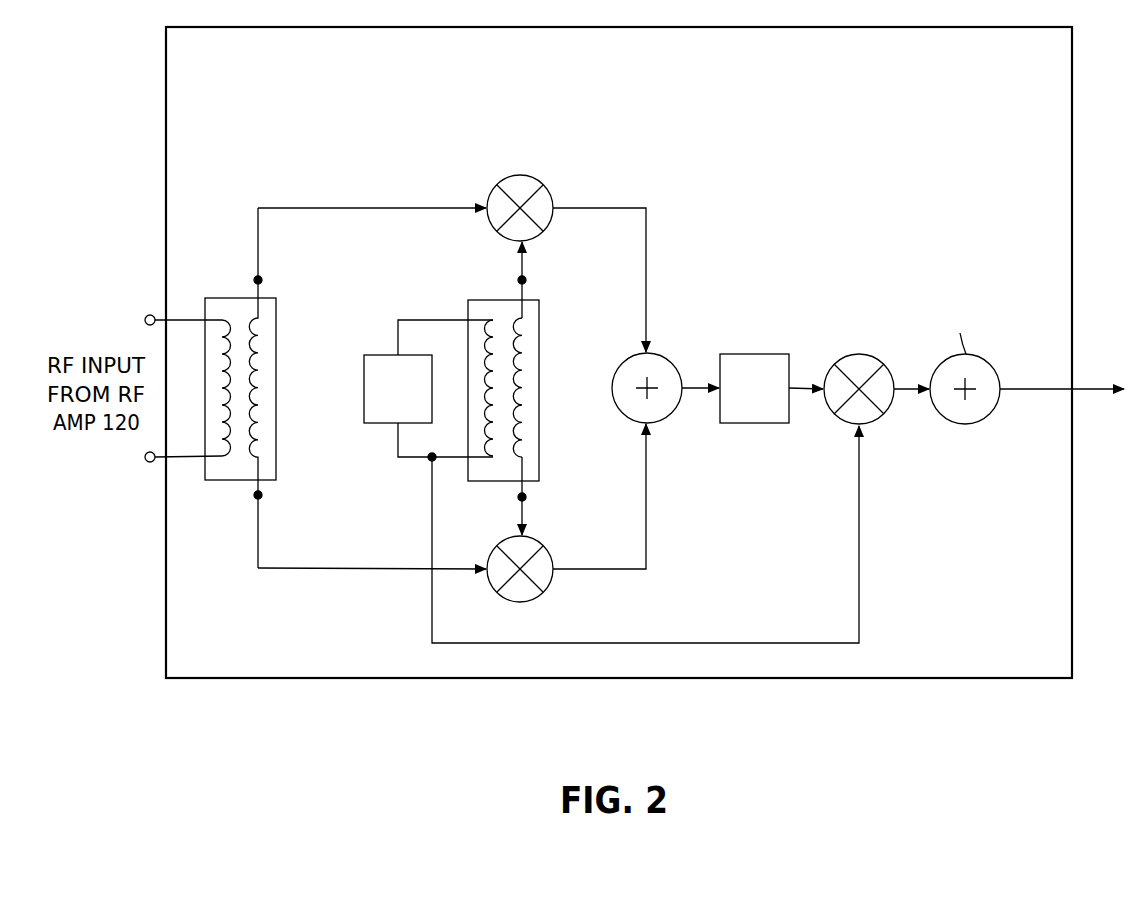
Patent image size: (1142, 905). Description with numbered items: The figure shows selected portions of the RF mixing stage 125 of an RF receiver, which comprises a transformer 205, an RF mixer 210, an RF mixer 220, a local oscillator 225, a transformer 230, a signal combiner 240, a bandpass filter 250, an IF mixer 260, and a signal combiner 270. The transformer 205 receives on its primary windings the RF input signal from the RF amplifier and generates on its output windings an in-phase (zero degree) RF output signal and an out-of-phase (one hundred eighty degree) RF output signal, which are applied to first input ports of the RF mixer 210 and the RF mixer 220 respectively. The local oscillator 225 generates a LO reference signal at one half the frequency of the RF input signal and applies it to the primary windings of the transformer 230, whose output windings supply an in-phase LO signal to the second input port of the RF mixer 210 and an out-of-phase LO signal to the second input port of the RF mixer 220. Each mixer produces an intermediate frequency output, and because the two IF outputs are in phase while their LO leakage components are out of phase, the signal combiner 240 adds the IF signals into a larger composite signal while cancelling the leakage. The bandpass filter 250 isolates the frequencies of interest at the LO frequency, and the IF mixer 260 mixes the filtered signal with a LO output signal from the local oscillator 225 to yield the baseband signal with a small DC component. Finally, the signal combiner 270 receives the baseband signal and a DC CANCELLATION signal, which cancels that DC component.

The RF mixing stage 125 is at (645, 680).
The transformer 205 is at (277, 328).
The RF mixer 210 is at (518, 175).
The RF mixer 220 is at (547, 550).
The local oscillator 225 is at (372, 424).
The transformer 230 is at (541, 328).
The signal combiner 240 is at (622, 414).
The bandpass filter 250 is at (748, 354).
The IF mixer 260 is at (860, 355).
The signal combiner 270 is at (960, 425).